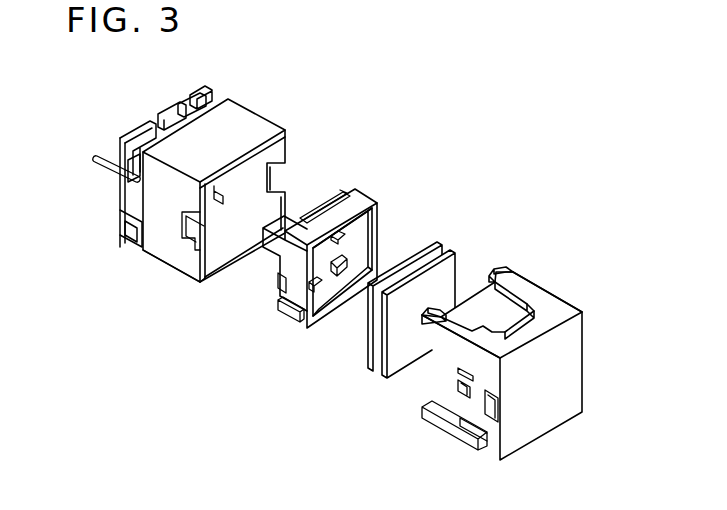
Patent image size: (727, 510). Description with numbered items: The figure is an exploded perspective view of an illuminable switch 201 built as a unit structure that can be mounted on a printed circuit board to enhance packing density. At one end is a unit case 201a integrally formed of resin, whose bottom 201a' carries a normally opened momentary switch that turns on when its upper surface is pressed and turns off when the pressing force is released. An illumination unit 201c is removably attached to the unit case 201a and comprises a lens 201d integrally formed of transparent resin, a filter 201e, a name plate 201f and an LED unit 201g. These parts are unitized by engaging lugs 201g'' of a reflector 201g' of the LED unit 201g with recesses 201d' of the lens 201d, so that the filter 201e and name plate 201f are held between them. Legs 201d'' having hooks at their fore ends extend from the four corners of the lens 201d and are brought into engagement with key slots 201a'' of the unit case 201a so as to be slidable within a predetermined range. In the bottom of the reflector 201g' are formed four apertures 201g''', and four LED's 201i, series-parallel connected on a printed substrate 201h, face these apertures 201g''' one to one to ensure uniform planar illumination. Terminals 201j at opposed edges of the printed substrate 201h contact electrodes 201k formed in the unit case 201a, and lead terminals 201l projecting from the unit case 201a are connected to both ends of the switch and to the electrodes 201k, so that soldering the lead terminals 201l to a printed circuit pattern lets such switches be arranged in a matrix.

The illuminable switch 201 is at (344, 80).
The unit case 201a is at (214, 158).
The bottom 201a' is at (144, 237).
The key slots 201a'' is at (167, 307).
The illumination unit 201c is at (601, 236).
The lens 201d is at (538, 432).
The recesses 201d' is at (424, 425).
The legs 201d'' is at (468, 448).
The filter 201e is at (405, 352).
The name plate 201f is at (367, 352).
The LED unit 201g is at (358, 226).
The reflector 201g' is at (266, 355).
The lugs 201g'' is at (252, 320).
The apertures 201g''' is at (408, 226).
The printed substrate 201h is at (270, 262).
The LED's 201i is at (334, 276).
The terminals 201j is at (326, 204).
The electrodes 201k is at (184, 226).
The lead terminals 201l is at (98, 162).